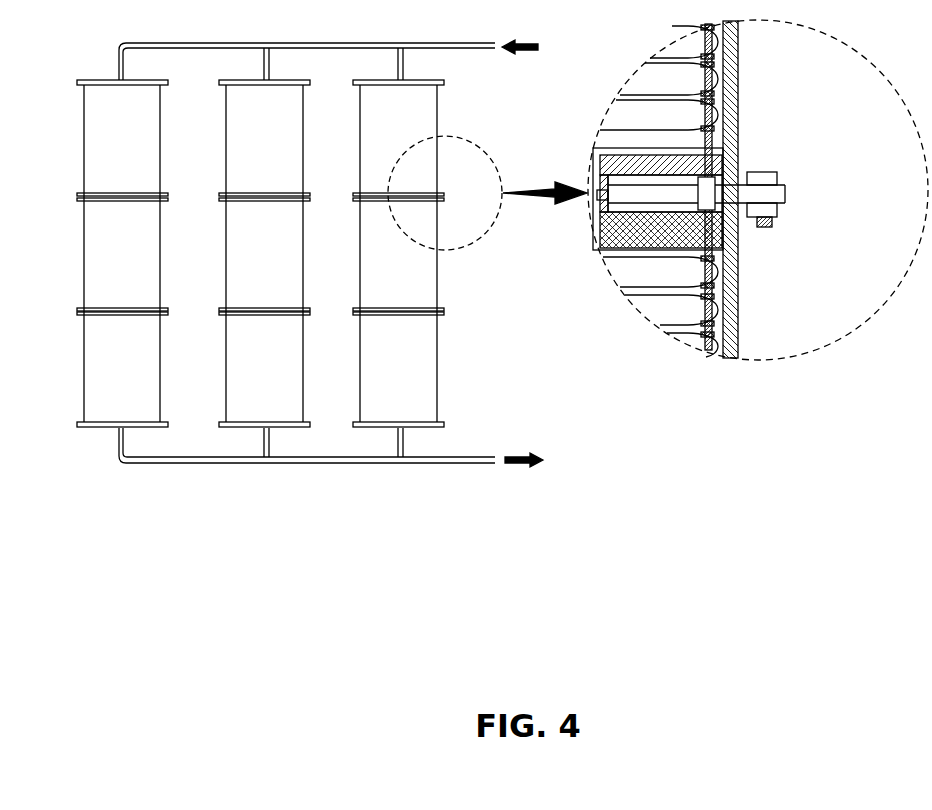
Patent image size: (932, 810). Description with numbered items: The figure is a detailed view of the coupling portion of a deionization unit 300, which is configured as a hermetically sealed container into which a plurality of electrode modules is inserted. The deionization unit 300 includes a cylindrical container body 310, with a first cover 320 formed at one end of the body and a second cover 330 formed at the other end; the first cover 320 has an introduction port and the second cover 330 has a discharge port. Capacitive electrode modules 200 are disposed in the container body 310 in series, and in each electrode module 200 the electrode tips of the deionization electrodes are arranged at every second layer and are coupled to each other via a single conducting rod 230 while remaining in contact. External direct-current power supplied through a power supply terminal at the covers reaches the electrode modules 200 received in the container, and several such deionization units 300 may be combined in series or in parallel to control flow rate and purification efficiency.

The deionization unit 300 is at (103, 143).
The capacitive electrode module 200 is at (657, 54).
The cylindrical container body 310 is at (740, 60).
The first cover 320 is at (723, 229).
The second cover 330 is at (725, 166).
The conducting rod 230 is at (738, 283).